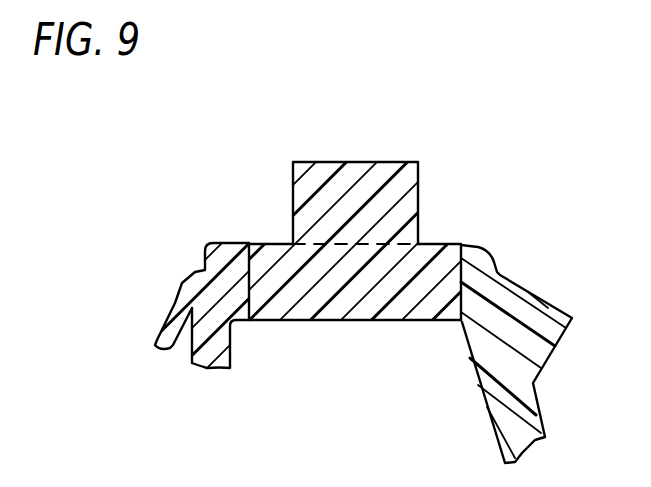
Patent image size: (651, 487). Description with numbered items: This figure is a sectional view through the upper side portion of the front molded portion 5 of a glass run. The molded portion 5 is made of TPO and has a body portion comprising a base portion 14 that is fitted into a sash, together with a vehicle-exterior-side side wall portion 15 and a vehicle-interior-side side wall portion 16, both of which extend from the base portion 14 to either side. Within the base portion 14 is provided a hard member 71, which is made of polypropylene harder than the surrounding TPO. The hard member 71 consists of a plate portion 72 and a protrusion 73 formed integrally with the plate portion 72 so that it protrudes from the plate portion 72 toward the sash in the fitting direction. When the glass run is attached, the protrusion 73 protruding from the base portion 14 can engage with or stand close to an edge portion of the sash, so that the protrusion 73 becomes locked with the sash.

The molded portion 5 is at (502, 176).
The base portion 14 is at (227, 242).
The vehicle-exterior-side side wall portion 15 is at (192, 343).
The vehicle-interior-side side wall portion 16 is at (536, 410).
The hard member 71 is at (397, 113).
The plate portion 72 is at (261, 242).
The protrusion 73 is at (337, 161).